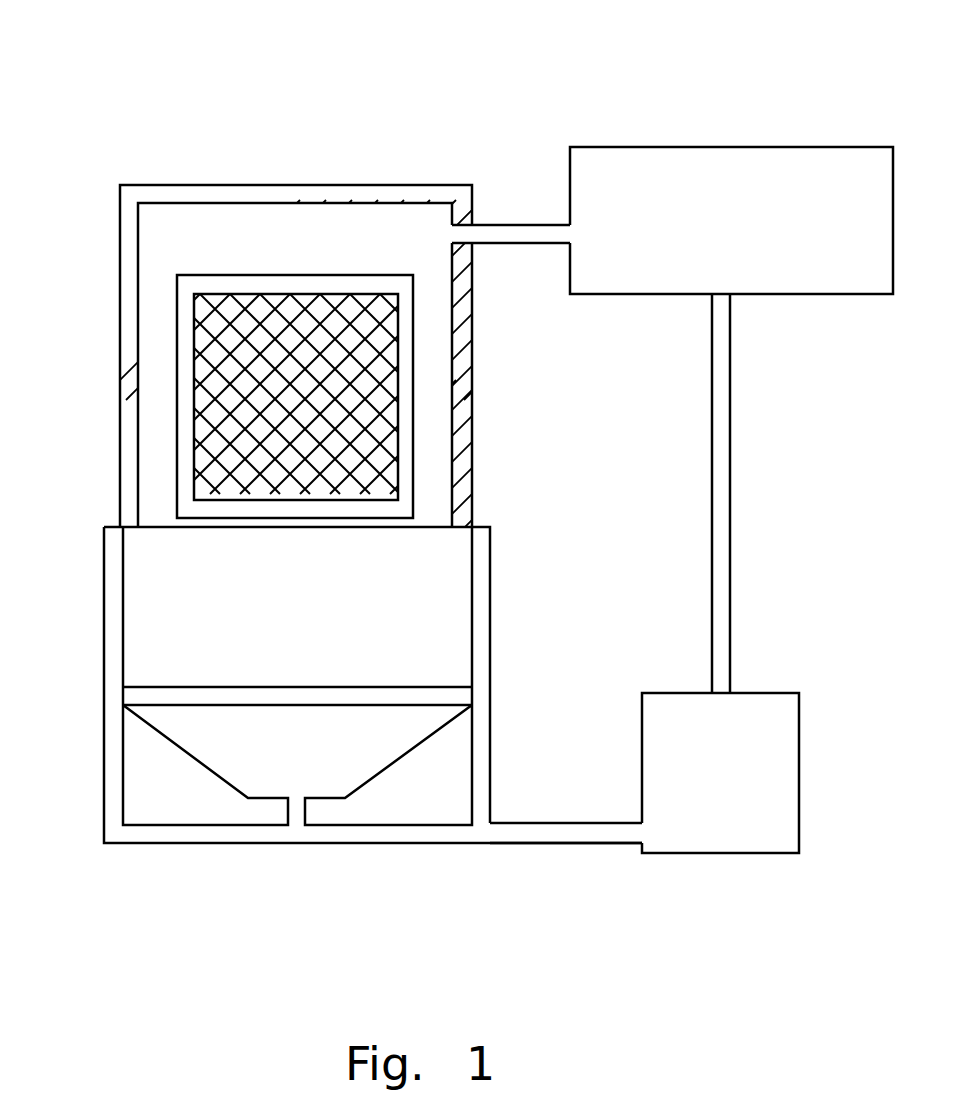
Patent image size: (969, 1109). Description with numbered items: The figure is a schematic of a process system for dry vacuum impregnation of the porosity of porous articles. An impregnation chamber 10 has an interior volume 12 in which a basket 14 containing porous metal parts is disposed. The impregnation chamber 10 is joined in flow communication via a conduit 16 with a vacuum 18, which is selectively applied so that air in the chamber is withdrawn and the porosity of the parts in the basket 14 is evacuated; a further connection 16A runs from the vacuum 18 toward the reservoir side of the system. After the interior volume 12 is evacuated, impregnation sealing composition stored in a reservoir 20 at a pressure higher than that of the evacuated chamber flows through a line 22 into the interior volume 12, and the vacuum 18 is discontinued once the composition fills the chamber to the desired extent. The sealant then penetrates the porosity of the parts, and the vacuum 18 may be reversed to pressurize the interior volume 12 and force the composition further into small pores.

The impregnation chamber 10 is at (120, 330).
The interior volume 12 is at (378, 232).
The basket 14 is at (242, 318).
The conduit 16 is at (513, 243).
The connecting conduit 16A is at (712, 469).
The vacuum 18 is at (850, 263).
The reservoir 20 is at (785, 740).
The line 22 is at (569, 832).